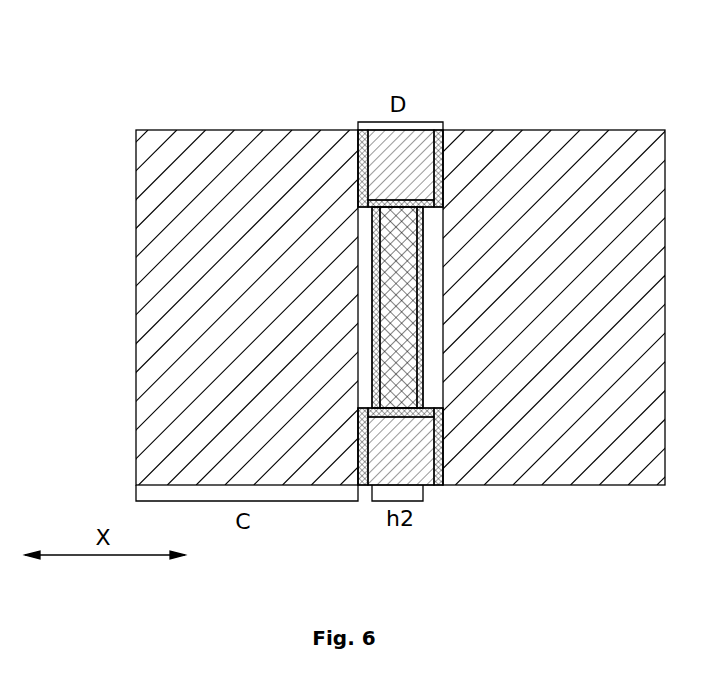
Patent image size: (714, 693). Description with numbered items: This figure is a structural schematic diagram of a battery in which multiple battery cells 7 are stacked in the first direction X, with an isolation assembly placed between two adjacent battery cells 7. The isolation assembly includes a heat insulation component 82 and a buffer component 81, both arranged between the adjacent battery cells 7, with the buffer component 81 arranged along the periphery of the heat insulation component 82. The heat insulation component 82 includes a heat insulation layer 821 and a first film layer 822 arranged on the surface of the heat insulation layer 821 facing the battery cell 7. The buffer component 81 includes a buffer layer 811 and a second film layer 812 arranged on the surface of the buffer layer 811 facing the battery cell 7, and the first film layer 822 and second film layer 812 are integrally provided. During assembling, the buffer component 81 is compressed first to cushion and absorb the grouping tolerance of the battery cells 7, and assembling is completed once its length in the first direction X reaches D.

The battery cell 7 is at (243, 130).
The heat insulation component 82 is at (392, 217).
The heat insulation layer 821 is at (392, 239).
The first film layer 822 is at (372, 282).
The buffer component 81 is at (433, 499).
The buffer layer 811 is at (430, 487).
The second film layer 812 is at (437, 487).